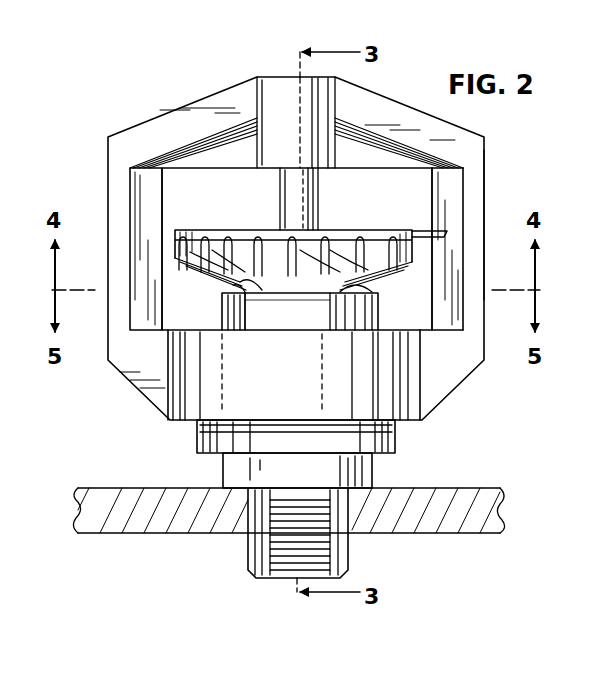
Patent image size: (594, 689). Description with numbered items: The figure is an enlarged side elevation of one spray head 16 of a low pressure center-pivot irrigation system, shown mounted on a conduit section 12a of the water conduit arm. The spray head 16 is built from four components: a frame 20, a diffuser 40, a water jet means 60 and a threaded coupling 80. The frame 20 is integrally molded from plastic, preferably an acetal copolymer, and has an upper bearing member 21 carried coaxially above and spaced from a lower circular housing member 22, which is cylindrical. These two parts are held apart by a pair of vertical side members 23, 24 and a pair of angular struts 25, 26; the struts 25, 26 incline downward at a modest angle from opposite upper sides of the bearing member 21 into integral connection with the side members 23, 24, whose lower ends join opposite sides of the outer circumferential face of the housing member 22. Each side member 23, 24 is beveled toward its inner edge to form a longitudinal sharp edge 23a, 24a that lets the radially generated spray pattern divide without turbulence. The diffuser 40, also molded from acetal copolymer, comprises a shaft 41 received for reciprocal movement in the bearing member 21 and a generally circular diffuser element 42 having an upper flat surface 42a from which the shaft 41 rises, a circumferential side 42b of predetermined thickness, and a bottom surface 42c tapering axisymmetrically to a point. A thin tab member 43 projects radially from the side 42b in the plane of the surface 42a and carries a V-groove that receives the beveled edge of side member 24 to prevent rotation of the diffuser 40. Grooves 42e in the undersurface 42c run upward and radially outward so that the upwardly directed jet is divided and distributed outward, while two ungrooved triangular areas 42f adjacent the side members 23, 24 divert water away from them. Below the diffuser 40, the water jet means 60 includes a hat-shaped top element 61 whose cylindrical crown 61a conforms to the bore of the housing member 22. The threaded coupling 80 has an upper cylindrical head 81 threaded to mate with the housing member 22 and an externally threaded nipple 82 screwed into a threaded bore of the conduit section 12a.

The conduit section 12a is at (498, 490).
The spray head 16 is at (509, 168).
The frame 20 is at (489, 142).
The upper bearing member 21 is at (270, 82).
The circular housing member 22 is at (186, 400).
The side member 23 is at (116, 187).
The longitudinal sharp edge 23a is at (165, 204).
The side member 24 is at (470, 192).
The longitudinal sharp edge 24a is at (433, 207).
The angular strut 25 is at (208, 106).
The angular strut 26 is at (396, 108).
The diffuser 40 is at (215, 228).
The shaft 41 is at (292, 188).
The diffuser element 42 is at (346, 234).
The upper flat surface 42a is at (252, 229).
The circumferential side 42b is at (321, 232).
The bottom surface 42c is at (226, 284).
The grooves 42e is at (420, 266).
The triangular areas 42f is at (200, 263).
The tab member 43 is at (421, 232).
The water jet means 60 is at (290, 318).
The top element 61 is at (318, 322).
The cylindrical crown 61a is at (263, 323).
The threaded coupling 80 is at (399, 436).
The upper cylindrical head 81 is at (216, 433).
The externally threaded nipple 82 is at (248, 549).